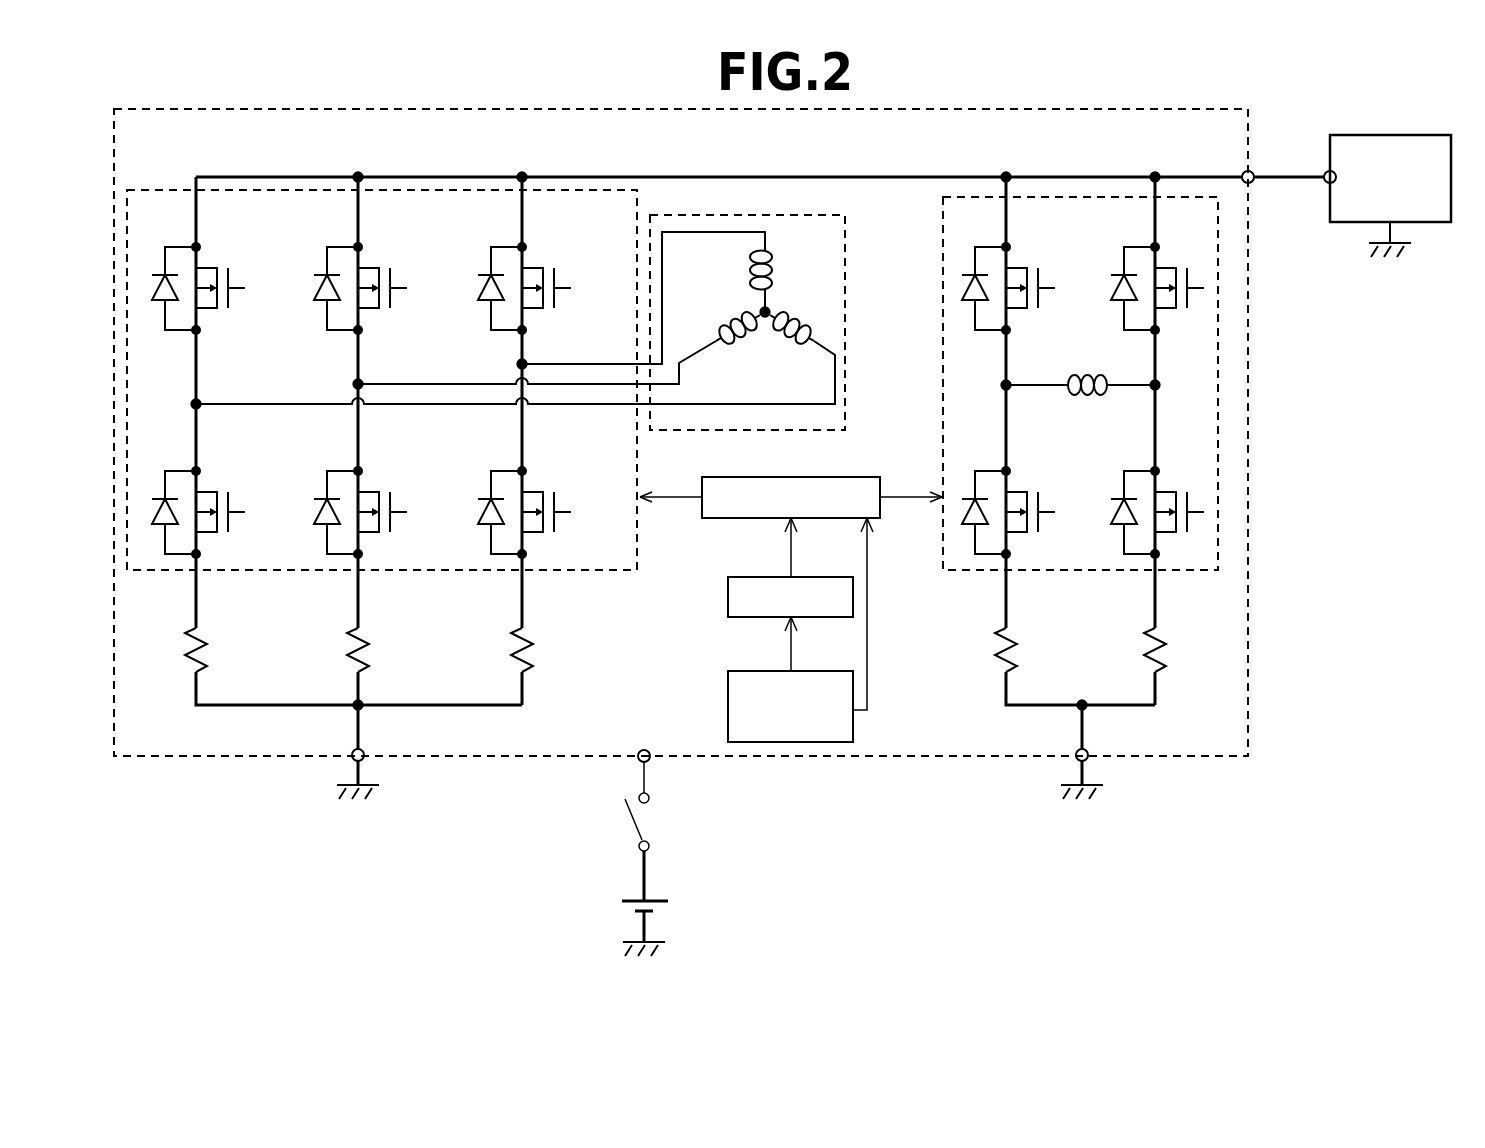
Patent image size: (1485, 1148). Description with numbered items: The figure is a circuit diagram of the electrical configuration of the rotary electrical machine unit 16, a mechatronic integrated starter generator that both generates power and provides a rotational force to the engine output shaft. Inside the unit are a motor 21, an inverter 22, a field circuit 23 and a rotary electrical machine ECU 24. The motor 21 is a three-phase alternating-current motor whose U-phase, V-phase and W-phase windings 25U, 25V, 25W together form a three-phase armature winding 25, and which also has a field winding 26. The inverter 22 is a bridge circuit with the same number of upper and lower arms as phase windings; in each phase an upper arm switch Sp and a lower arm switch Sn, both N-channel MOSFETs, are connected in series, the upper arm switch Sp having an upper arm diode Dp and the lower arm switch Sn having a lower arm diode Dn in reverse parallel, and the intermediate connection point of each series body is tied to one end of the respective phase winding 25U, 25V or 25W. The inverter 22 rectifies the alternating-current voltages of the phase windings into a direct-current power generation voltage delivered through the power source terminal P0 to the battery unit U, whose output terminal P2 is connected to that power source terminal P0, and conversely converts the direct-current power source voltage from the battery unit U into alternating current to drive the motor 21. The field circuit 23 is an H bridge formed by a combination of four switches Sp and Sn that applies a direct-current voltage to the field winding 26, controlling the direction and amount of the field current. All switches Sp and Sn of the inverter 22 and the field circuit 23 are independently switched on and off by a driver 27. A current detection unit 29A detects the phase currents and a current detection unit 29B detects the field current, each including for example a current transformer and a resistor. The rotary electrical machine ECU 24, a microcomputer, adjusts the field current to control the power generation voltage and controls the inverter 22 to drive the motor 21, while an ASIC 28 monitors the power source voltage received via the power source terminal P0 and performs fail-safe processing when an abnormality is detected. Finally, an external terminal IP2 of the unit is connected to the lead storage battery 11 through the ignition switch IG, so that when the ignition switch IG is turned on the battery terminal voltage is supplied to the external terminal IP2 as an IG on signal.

The rotary electrical machine unit 16 is at (1040, 108).
The inverter 22 is at (638, 172).
The field circuit 23 is at (1170, 173).
The motor 21 is at (930, 382).
The three-phase armature winding 25 is at (790, 324).
The U-phase winding 25U is at (756, 270).
The V-phase winding 25V is at (795, 342).
The W-phase winding 25W is at (737, 342).
The field winding 26 is at (1066, 381).
The driver 27 is at (820, 477).
The ASIC 28 is at (815, 577).
The rotary electrical machine ECU 24 is at (815, 671).
The current detection unit 29A is at (207, 657).
The current detection unit 29B is at (1017, 657).
The lead storage battery 11 is at (655, 898).
The ignition switch IG is at (634, 825).
The external terminal IP2 is at (650, 762).
The power source terminal P0 is at (1253, 171).
The output terminal P2 is at (1325, 172).
The battery unit U is at (1440, 135).
The upper arm diode Dp is at (156, 272).
The upper arm switch Sp is at (206, 268).
The lower arm diode Dn is at (156, 496).
The lower arm switch Sn is at (206, 492).